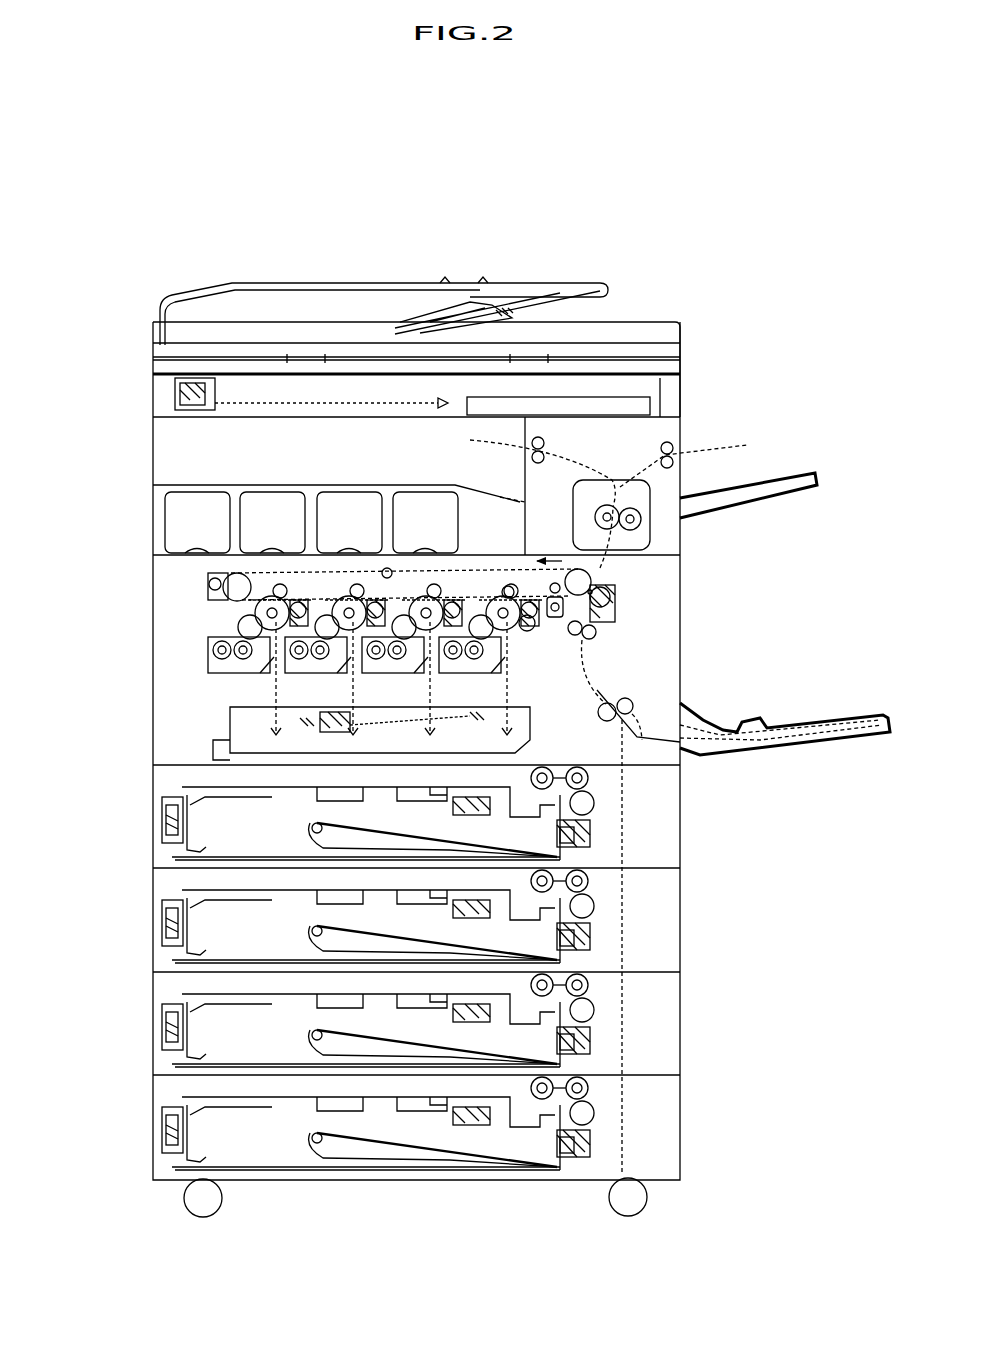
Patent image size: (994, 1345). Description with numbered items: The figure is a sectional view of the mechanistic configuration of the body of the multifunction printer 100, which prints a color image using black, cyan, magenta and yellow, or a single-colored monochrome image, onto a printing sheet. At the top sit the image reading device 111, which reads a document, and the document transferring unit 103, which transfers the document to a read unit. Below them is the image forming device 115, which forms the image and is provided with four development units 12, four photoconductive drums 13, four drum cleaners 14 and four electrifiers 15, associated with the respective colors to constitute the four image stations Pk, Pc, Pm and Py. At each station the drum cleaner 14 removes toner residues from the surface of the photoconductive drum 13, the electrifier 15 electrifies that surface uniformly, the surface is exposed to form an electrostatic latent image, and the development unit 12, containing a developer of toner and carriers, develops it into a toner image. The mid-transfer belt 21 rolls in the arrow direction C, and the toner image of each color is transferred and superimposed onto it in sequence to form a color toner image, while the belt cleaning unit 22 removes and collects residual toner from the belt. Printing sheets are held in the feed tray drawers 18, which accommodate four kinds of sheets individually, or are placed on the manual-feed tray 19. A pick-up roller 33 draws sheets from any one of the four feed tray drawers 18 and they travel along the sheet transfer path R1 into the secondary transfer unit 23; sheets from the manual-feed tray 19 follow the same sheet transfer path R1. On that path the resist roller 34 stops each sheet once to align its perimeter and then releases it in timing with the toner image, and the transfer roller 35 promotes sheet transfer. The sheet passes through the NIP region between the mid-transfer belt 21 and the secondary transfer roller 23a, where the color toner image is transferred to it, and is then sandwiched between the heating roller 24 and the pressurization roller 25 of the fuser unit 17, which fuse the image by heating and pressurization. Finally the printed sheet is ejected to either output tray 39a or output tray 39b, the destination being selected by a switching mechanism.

The multifunction printer 100 is at (497, 238).
The document transferring unit 103 is at (345, 285).
The image reading device 111 is at (200, 383).
The output tray 39a is at (183, 485).
The output tray 39b is at (795, 470).
The fuser unit 17 is at (652, 488).
The heating roller 24 is at (583, 508).
The pressurization roller 25 is at (640, 530).
The arrow direction C is at (549, 547).
The mid-transfer belt 21 is at (475, 567).
The belt cleaning unit 22 is at (206, 583).
The photoconductive drum 13 is at (493, 598).
The secondary transfer unit 23 is at (624, 590).
The secondary transfer roller 23a is at (623, 602).
The image forming device 115 is at (293, 659).
The image station Py is at (210, 672).
The image station Pm is at (288, 676).
The image station Pc is at (363, 676).
The image station Pk is at (437, 676).
The development unit 12 is at (478, 672).
The drum cleaner 14 is at (537, 623).
The electrifier 15 is at (524, 637).
The resist roller 34 is at (590, 636).
The transfer roller 35 is at (627, 693).
The sheet transfer path R1 is at (587, 673).
The manual-feed tray 19 is at (858, 712).
The feed tray drawer 18 is at (170, 822).
The pick-up roller 33 is at (615, 770).